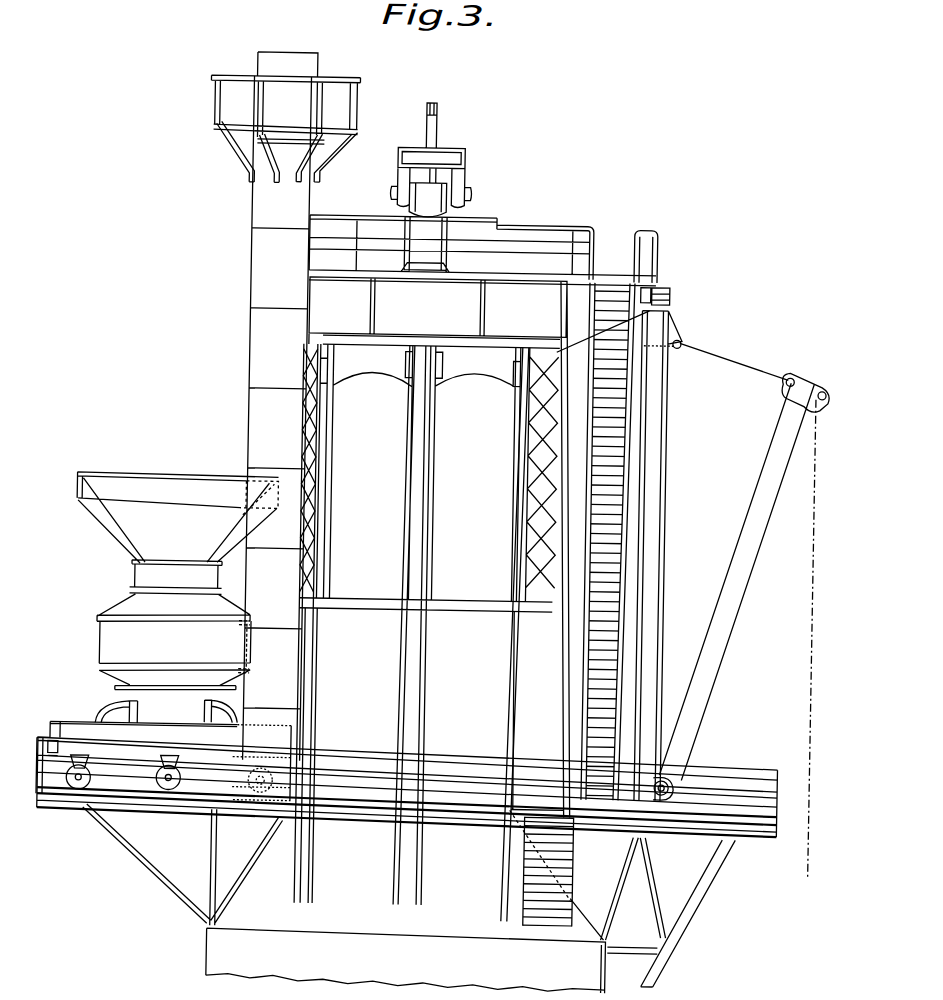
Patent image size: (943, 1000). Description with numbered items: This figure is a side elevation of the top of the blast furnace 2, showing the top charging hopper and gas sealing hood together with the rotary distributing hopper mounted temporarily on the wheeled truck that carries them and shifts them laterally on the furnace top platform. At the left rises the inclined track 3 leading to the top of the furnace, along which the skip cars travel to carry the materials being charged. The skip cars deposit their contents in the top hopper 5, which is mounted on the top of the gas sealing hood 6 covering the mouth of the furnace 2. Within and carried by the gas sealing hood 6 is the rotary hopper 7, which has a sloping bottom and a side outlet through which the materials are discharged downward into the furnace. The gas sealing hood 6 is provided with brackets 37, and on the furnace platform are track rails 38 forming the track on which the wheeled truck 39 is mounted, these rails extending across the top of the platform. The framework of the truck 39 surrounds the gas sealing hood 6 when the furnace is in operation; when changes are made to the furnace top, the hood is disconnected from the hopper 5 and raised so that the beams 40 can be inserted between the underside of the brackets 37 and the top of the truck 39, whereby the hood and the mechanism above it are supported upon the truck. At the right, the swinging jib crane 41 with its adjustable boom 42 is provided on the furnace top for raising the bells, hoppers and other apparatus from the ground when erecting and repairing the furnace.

The blast furnace 2 is at (471, 912).
The inclined track 3 is at (437, 645).
The top hopper 5 is at (177, 519).
The gas sealing hood 6 is at (174, 593).
The rotary hopper 7 is at (175, 655).
The brackets 37 is at (124, 715).
The track rails 38 is at (167, 805).
The wheeled truck 39 is at (166, 748).
The beams 40 is at (87, 732).
The swinging jib crane 41 is at (658, 569).
The adjustable boom 42 is at (750, 574).